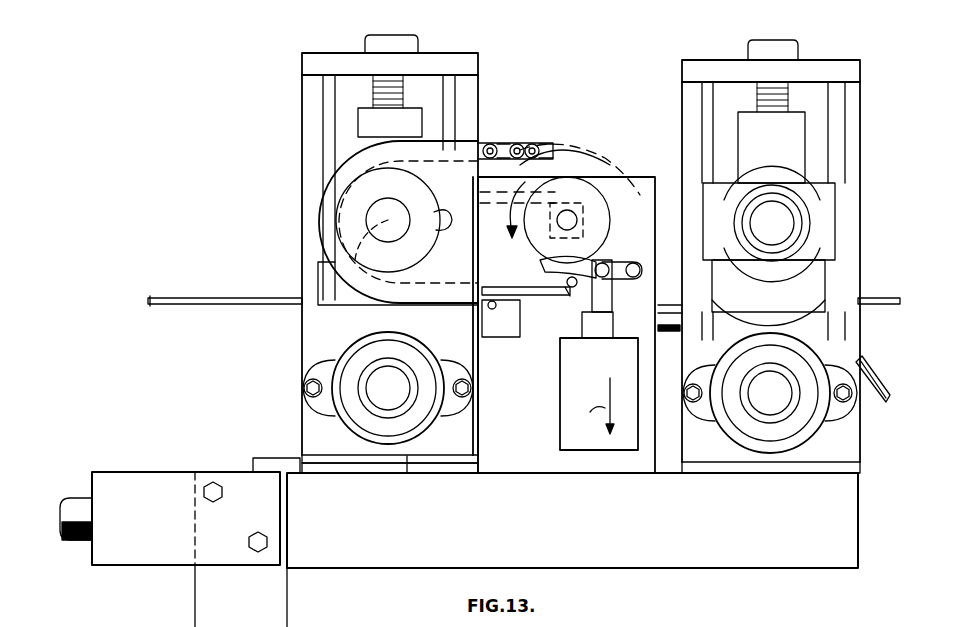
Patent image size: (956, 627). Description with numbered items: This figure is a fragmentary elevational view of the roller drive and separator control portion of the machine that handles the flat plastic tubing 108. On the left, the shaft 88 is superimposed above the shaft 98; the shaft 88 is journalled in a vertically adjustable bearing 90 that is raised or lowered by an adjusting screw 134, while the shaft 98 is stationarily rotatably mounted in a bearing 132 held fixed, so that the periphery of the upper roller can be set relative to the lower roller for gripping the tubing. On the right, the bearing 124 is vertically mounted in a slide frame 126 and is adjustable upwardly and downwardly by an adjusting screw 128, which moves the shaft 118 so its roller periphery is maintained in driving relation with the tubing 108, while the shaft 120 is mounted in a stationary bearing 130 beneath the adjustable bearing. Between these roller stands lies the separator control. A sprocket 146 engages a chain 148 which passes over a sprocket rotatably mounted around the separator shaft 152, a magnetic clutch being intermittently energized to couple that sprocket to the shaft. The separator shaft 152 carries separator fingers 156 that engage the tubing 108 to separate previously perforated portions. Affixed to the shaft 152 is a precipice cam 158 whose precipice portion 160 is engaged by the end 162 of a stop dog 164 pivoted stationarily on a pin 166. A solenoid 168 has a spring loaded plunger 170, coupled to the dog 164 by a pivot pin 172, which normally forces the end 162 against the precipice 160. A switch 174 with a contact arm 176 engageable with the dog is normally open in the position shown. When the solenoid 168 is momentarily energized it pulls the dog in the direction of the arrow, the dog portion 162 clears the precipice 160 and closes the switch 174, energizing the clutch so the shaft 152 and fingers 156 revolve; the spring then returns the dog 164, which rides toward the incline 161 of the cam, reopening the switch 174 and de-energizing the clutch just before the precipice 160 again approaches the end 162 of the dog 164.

The shaft 88 is at (388, 220).
The bearing 90 is at (410, 122).
The shaft 98 is at (400, 396).
The flat plastic tubing 108 is at (192, 298).
The shaft 118 is at (778, 225).
The shaft 120 is at (772, 405).
The bearing 124 is at (805, 200).
The slide frame 126 is at (848, 130).
The adjusting screw 128 is at (760, 135).
The stationary bearing 130 is at (745, 445).
The bearing 132 is at (421, 477).
The adjusting screw 134 is at (405, 46).
The sprocket 146 is at (436, 236).
The chain 148 is at (532, 143).
The separator shaft 152 is at (567, 220).
The separator fingers 156 is at (562, 150).
The precipice cam 158 is at (604, 222).
The precipice portion 160 is at (545, 262).
The incline 161 is at (600, 212).
The end of stop dog 162 is at (605, 264).
The stop dog 164 is at (625, 282).
The pin 166 is at (645, 270).
The solenoid 168 is at (580, 402).
The spring loaded plunger 170 is at (600, 303).
The pivot pin 172 is at (598, 273).
The switch 174 is at (482, 318).
The contact arm 176 is at (566, 290).